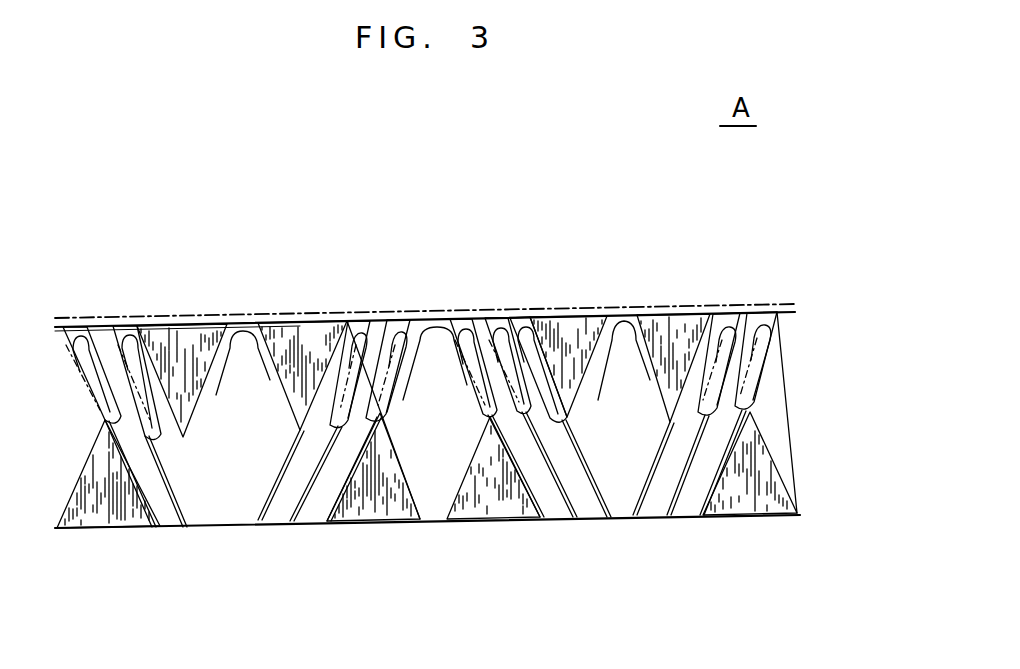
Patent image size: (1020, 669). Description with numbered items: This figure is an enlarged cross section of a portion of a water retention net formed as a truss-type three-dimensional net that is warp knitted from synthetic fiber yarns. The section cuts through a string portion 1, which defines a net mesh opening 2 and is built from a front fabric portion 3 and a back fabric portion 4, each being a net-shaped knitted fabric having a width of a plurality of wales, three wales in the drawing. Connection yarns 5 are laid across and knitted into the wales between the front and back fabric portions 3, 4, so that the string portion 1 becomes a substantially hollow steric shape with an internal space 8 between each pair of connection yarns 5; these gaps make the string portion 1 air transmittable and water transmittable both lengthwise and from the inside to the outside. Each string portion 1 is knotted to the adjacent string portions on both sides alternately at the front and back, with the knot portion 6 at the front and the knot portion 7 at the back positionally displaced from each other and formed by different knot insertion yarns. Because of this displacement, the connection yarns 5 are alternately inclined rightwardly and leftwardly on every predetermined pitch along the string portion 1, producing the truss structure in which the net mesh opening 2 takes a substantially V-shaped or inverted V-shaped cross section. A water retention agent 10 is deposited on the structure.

The string portion 1 is at (108, 300).
The net mesh opening 2 is at (623, 310).
The front fabric portion 3 is at (502, 313).
The back fabric portion 4 is at (555, 520).
The connection yarns 5 is at (420, 387).
The knot portion at the front 6 is at (247, 313).
The knot portion at the back 7 is at (237, 530).
The internal space 8 is at (396, 316).
The water retention agent 10 is at (227, 313).